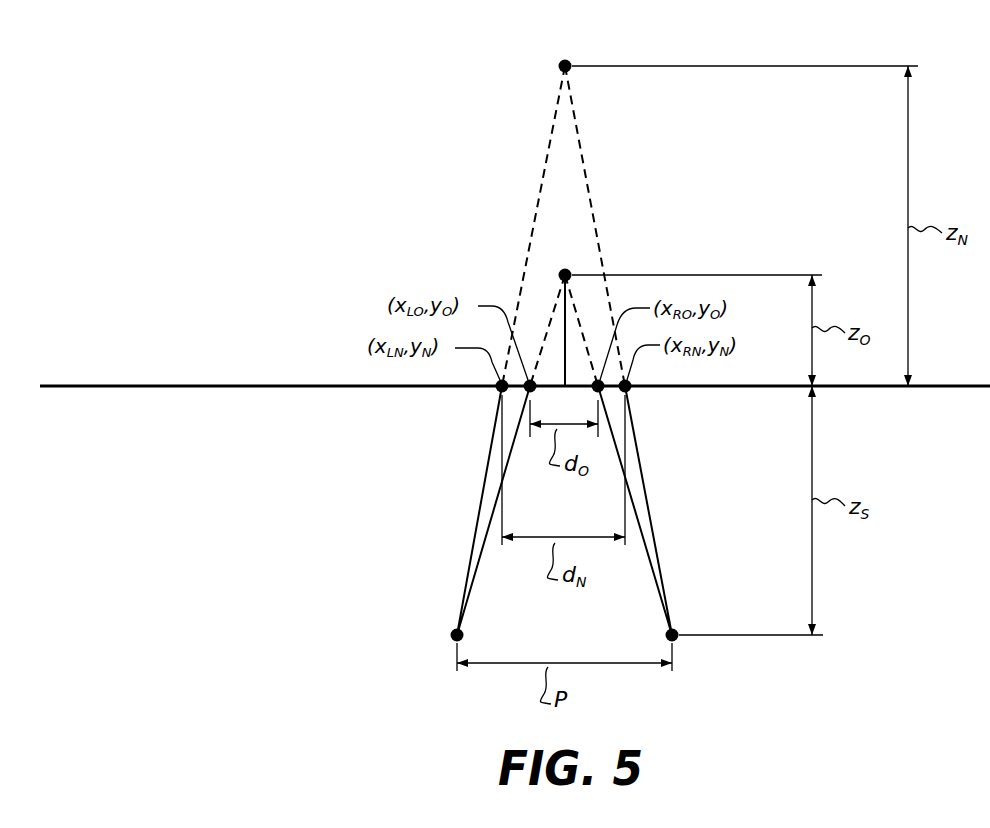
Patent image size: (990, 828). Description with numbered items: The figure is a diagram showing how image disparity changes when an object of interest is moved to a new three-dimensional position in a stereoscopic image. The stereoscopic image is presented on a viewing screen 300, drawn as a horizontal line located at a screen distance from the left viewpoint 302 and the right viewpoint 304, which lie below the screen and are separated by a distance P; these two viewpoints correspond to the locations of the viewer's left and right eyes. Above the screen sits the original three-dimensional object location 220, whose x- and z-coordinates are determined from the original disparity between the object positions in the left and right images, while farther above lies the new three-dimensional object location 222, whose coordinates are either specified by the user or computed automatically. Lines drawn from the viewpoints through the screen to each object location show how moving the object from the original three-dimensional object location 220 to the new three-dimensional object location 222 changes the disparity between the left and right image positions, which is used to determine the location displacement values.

The viewing screen 300 is at (145, 385).
The new 3-D object location 222 is at (565, 58).
The original 3-D object location 220 is at (569, 268).
The left viewpoint 302 is at (455, 630).
The right viewpoint 304 is at (673, 630).